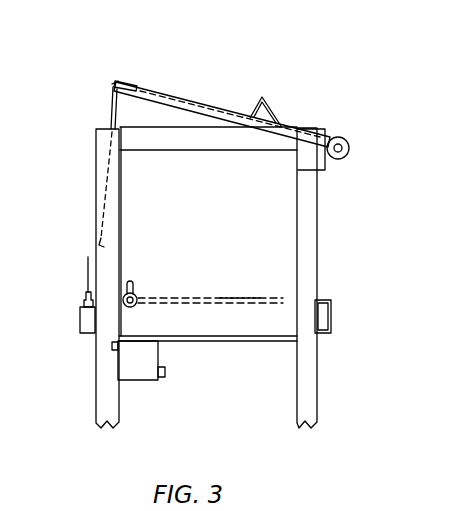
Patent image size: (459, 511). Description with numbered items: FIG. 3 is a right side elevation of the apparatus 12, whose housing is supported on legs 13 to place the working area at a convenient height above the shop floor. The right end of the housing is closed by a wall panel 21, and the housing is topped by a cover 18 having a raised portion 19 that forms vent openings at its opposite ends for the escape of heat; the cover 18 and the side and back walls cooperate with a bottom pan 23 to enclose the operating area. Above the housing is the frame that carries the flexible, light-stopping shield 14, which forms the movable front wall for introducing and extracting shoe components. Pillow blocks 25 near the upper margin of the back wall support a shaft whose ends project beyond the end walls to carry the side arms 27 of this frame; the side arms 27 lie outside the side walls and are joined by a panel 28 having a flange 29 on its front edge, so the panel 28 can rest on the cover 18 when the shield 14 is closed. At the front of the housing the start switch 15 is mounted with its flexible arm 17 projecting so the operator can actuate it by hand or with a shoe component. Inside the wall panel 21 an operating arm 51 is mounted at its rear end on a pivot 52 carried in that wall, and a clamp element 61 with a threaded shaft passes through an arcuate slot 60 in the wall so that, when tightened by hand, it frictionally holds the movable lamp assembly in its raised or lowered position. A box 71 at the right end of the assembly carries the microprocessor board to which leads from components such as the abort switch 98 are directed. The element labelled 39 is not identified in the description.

The apparatus 12 is at (333, 216).
The legs 13 is at (100, 413).
The shield 14 is at (110, 111).
The start switch 15 is at (80, 318).
The flexible arm 17 is at (86, 263).
The cover 18 is at (300, 128).
The raised portion 19 is at (266, 104).
The wall panel 21 is at (219, 233).
The bottom pan 23 is at (235, 343).
The pillow blocks 25 is at (351, 146).
The side arms 27 is at (198, 104).
The panel 28 is at (128, 82).
The flange 29 is at (114, 84).
The latch 39 is at (332, 318).
The operating arm 51 is at (252, 274).
The pivot 52 is at (276, 297).
The arcuate slot 60 is at (134, 284).
The clamp element 61 is at (134, 306).
The box 71 is at (147, 374).
The abort switch 98 is at (112, 346).